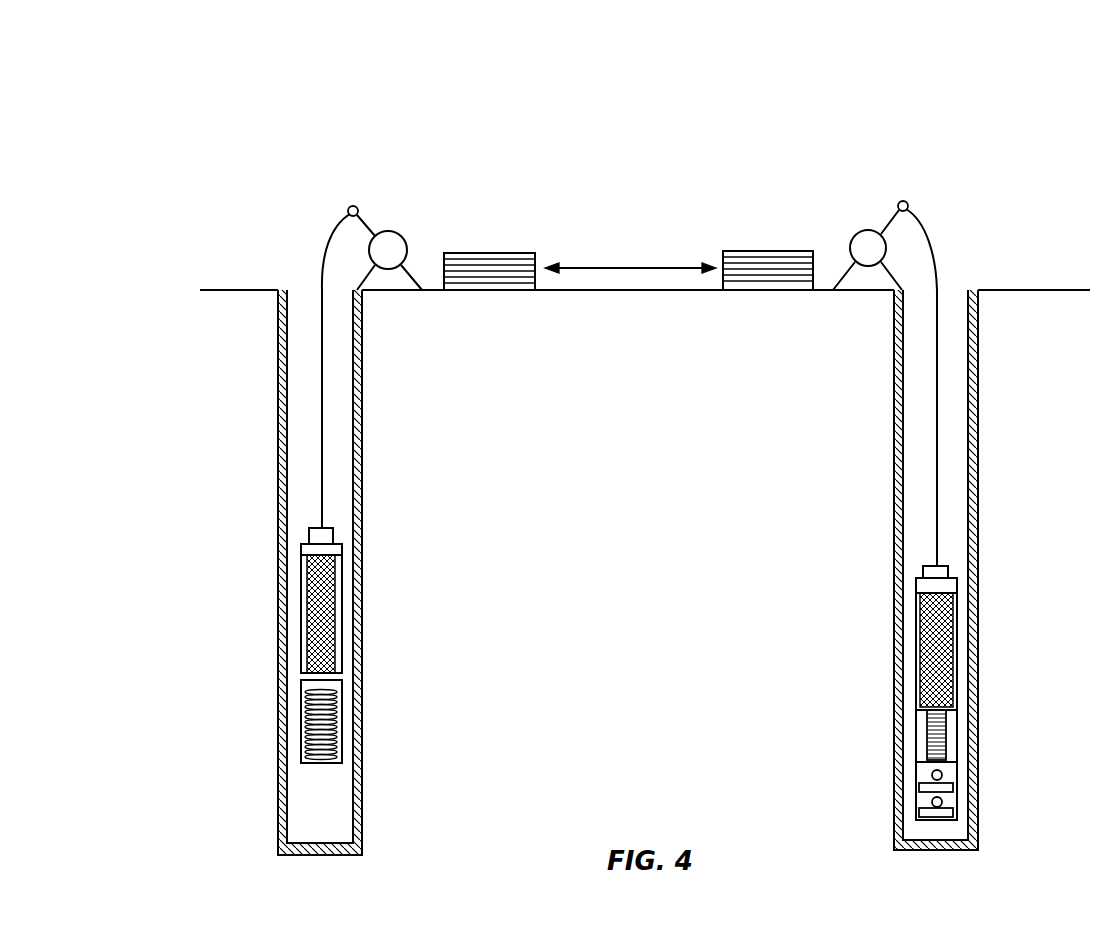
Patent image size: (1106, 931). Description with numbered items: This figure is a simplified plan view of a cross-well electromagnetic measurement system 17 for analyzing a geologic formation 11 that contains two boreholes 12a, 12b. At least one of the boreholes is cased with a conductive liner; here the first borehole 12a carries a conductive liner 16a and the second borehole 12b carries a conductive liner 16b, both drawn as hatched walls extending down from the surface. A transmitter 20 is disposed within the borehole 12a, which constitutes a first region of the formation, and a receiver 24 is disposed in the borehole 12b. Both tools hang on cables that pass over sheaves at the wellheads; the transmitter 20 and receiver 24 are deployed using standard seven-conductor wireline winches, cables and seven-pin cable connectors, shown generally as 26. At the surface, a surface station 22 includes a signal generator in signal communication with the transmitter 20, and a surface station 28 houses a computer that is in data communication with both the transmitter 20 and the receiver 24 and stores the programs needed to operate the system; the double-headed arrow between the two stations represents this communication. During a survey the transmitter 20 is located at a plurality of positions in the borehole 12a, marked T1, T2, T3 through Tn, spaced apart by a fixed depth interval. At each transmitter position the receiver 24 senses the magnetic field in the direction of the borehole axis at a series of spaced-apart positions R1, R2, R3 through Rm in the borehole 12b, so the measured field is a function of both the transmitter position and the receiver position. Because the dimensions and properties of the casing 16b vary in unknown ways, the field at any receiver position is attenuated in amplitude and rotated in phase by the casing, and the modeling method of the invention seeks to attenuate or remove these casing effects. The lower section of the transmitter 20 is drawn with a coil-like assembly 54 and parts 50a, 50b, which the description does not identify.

The cross-well logging system 17 is at (353, 146).
The geologic formation 11 is at (642, 393).
The borehole 12a is at (338, 360).
The borehole 12b is at (957, 348).
The conductive liner 16a is at (280, 485).
The conductive liner 16b is at (980, 460).
The wireline winches, cables and cable connectors 26 is at (397, 232).
The surface station 22 is at (488, 252).
The surface station 28 is at (770, 251).
The transmitter 20 is at (326, 655).
The receiver 24 is at (936, 686).
The transmitter position T1 is at (323, 302).
The transmitter position T2 is at (323, 397).
The transmitter position T3 is at (333, 583).
The transmitter position Tn is at (303, 740).
The receiver position R1 is at (938, 292).
The receiver position R2 is at (937, 385).
The receiver position R3 is at (917, 578).
The receiver position Rm is at (927, 740).
The spring housing 54 is at (337, 693).
The first coil winding 50a is at (338, 720).
The second coil winding 50b is at (337, 750).